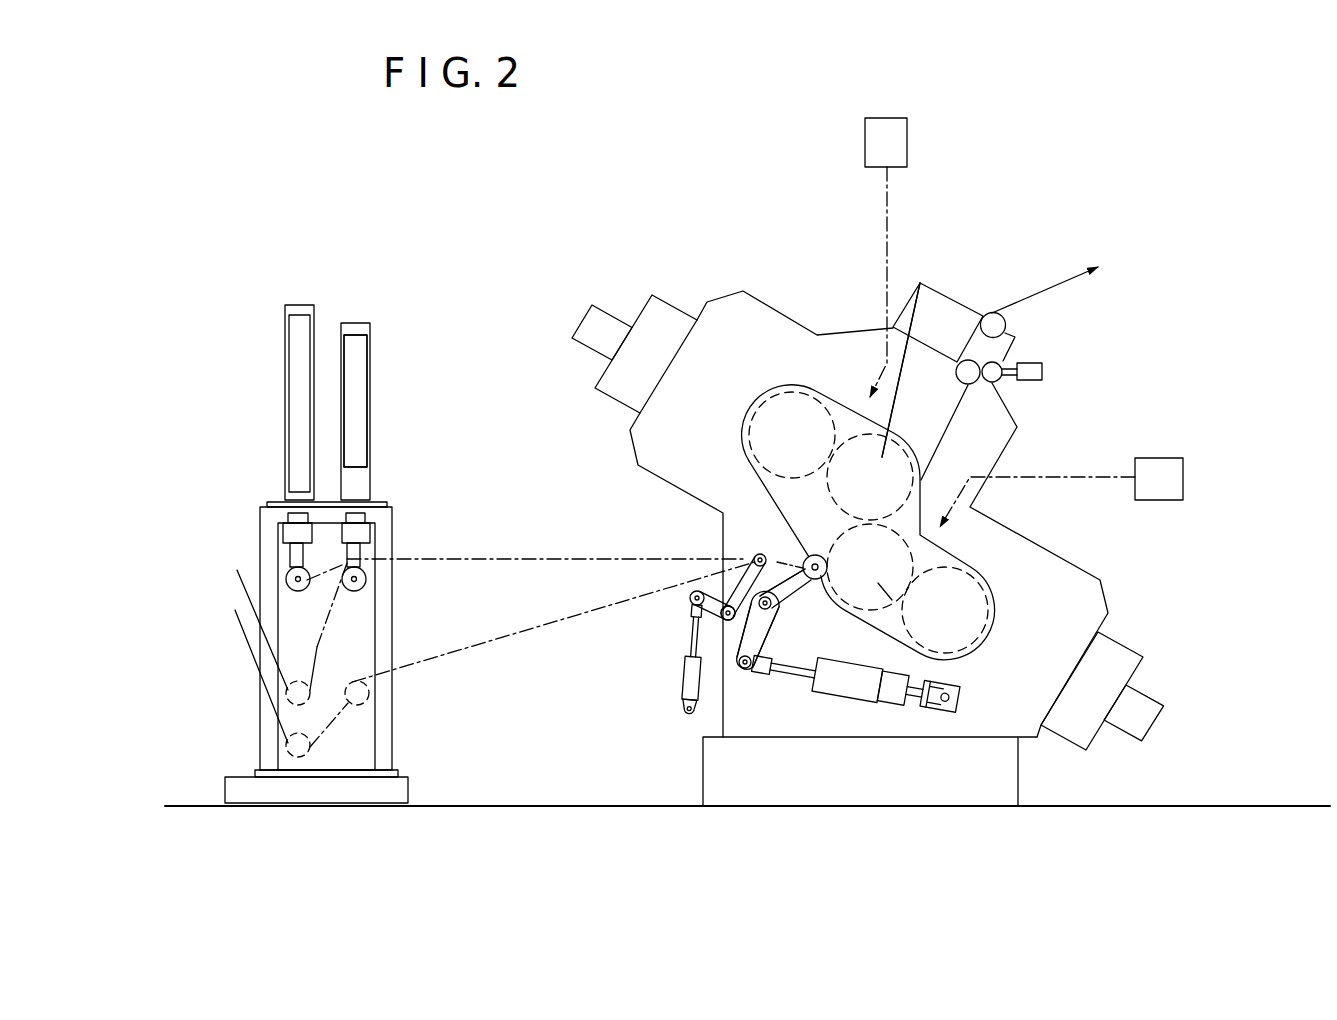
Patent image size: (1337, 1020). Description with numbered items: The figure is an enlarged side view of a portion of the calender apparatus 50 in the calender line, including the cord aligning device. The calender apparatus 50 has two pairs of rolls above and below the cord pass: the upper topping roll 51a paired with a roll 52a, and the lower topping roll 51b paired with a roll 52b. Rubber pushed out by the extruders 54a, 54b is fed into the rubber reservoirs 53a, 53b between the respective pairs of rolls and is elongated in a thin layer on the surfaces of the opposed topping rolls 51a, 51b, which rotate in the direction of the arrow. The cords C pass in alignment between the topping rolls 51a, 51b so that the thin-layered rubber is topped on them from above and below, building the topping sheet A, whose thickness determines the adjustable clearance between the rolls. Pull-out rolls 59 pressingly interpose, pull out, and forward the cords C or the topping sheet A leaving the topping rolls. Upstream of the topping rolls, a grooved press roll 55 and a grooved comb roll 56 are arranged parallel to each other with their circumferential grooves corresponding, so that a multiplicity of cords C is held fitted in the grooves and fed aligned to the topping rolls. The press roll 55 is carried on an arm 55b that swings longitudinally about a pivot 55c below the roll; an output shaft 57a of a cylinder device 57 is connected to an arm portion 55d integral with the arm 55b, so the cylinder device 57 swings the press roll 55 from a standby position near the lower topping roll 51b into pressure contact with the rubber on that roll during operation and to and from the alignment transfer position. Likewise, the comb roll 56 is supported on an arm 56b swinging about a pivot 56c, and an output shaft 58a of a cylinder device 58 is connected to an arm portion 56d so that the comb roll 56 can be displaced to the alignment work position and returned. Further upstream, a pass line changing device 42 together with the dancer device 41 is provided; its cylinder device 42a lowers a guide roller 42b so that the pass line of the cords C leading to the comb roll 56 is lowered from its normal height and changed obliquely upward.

The dancer device 41 is at (273, 392).
The pass line changing device 42 is at (380, 362).
The cylinder device 42a is at (358, 403).
The guide roller 42b is at (367, 582).
The cords C is at (533, 548).
The calender apparatus 50 is at (708, 231).
The topping roll 51a is at (893, 400).
The topping roll 51b is at (878, 583).
The roll 52a is at (787, 413).
The roll 52b is at (970, 597).
The rubber reservoir 53a is at (850, 400).
The rubber reservoir 53b is at (953, 538).
The extruder 54a is at (907, 142).
The extruder 54b is at (1160, 458).
The grooved press roll 55 is at (808, 560).
The arm 55b is at (793, 580).
The pivot 55c is at (785, 585).
The arm portion 55d is at (768, 635).
The grooved comb roll 56 is at (757, 557).
The arm 56b is at (755, 561).
The pivot 56c is at (695, 653).
The arm portion 56d is at (755, 563).
The cylinder device 57 is at (850, 687).
The output shaft 57a is at (780, 674).
The cylinder device 58 is at (693, 692).
The output shaft 58a is at (696, 633).
The pull-out rolls 59 is at (1003, 360).
The topping sheet A is at (1050, 287).